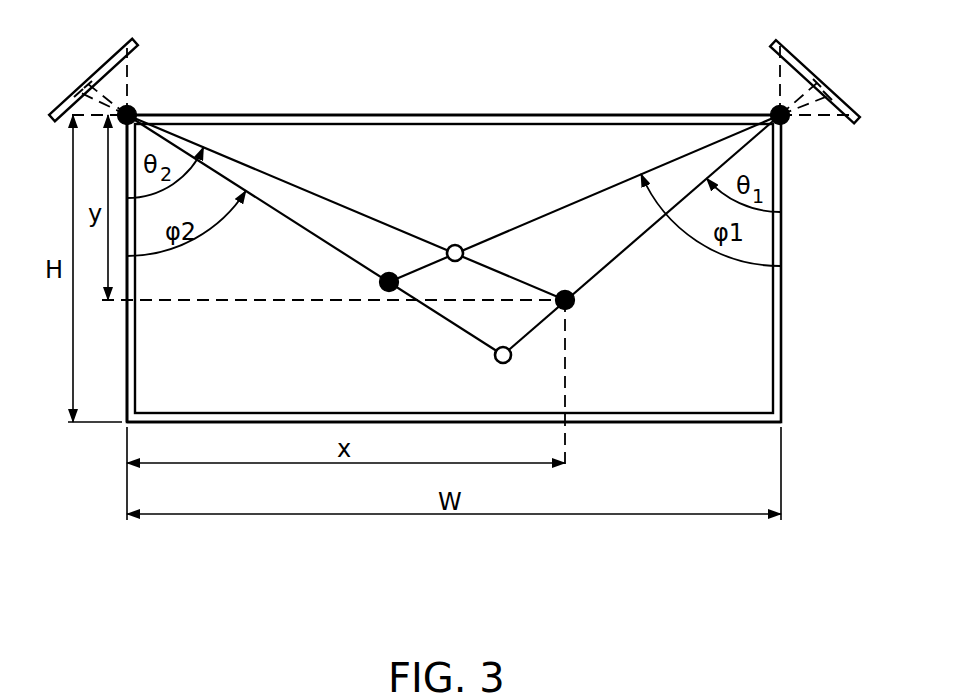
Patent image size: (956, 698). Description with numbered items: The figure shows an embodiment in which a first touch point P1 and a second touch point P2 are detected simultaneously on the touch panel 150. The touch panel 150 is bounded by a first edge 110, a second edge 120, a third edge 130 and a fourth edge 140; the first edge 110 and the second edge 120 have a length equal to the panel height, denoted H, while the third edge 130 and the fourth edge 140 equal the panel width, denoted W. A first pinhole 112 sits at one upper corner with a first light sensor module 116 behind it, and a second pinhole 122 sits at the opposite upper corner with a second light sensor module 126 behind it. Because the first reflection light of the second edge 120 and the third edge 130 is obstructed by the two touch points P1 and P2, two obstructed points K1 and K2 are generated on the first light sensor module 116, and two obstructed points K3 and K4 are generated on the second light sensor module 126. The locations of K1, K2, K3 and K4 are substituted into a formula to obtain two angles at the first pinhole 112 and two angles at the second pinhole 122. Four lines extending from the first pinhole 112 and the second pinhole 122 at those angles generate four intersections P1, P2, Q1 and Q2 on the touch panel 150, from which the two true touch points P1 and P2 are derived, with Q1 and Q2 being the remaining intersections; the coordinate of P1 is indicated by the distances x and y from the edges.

The first edge 110 is at (782, 378).
The first pinhole 112 is at (775, 108).
The first light sensor module 116 is at (852, 123).
The second edge 120 is at (126, 381).
The second pinhole 122 is at (135, 110).
The second light sensor module 126 is at (54, 125).
The third edge 130 is at (705, 424).
The fourth edge 140 is at (572, 113).
The touch panel 150 is at (730, 376).
The first touch point P1 is at (565, 290).
The second touch point P2 is at (379, 283).
The intersection Q1 is at (455, 244).
The intersection Q2 is at (494, 357).
The obstructed point K1 is at (817, 83).
The obstructed point K2 is at (828, 96).
The obstructed point K3 is at (78, 94).
The obstructed point K4 is at (88, 84).